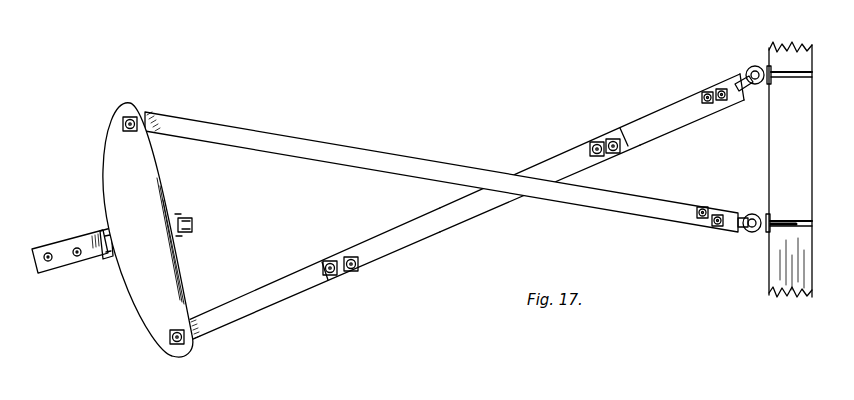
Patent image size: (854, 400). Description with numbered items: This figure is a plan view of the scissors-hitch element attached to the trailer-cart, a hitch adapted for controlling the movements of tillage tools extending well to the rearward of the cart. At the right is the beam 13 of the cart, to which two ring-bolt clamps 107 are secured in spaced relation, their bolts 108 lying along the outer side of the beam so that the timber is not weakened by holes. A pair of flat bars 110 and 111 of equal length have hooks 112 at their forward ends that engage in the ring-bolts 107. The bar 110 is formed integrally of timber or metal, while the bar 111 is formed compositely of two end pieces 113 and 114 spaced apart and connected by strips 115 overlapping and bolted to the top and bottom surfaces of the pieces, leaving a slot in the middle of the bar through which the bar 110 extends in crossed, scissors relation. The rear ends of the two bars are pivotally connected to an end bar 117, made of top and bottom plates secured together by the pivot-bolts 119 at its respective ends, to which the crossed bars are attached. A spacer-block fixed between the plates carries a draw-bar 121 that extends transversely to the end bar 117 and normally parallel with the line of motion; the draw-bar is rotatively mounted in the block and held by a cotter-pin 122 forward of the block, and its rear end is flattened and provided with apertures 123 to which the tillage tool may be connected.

The beam 13 is at (780, 152).
The ring-bolt clamp 107 is at (752, 66).
The bolt 108 is at (777, 233).
The flat bar 110 is at (357, 158).
The flat bar 111 is at (592, 142).
The hook 112 is at (735, 82).
The end piece 113 is at (308, 283).
The end piece 114 is at (682, 117).
The strip 115 is at (440, 218).
The end bar 117 is at (151, 230).
The pivot-bolt 119 is at (148, 115).
The draw-bar 121 is at (104, 257).
The cotter-pin 122 is at (196, 222).
The aperture 123 is at (77, 247).